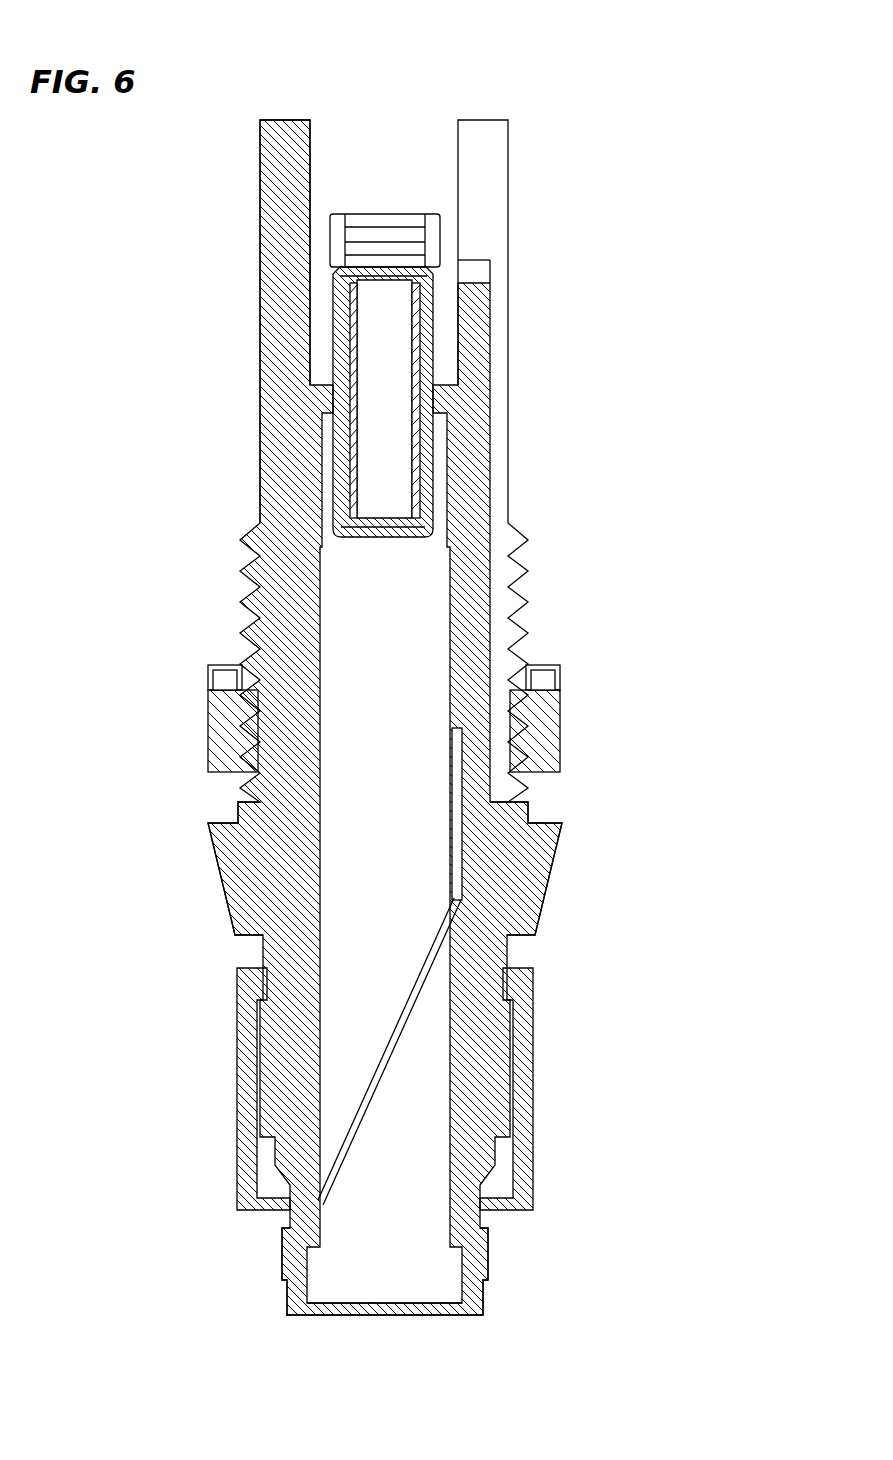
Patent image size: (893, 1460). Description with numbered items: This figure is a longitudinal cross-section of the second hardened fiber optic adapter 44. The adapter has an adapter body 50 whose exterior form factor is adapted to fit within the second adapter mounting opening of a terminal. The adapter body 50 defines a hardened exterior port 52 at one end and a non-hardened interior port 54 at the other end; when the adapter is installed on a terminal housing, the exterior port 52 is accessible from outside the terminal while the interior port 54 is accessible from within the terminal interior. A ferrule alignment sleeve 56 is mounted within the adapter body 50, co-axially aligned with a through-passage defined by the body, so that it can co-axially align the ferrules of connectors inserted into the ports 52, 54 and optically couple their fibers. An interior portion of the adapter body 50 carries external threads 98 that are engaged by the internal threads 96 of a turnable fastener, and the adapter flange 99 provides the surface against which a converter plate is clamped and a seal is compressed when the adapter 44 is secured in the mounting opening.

The second hardened fiber optic adapter 44 is at (625, 603).
The adapter body 50 is at (262, 962).
The hardened exterior port 52 is at (460, 1270).
The non-hardened interior port 54 is at (310, 178).
The ferrule alignment sleeve 56 is at (355, 326).
The internal threads 96 is at (238, 737).
The external threads 98 is at (240, 573).
The adapter flange 99 is at (547, 823).